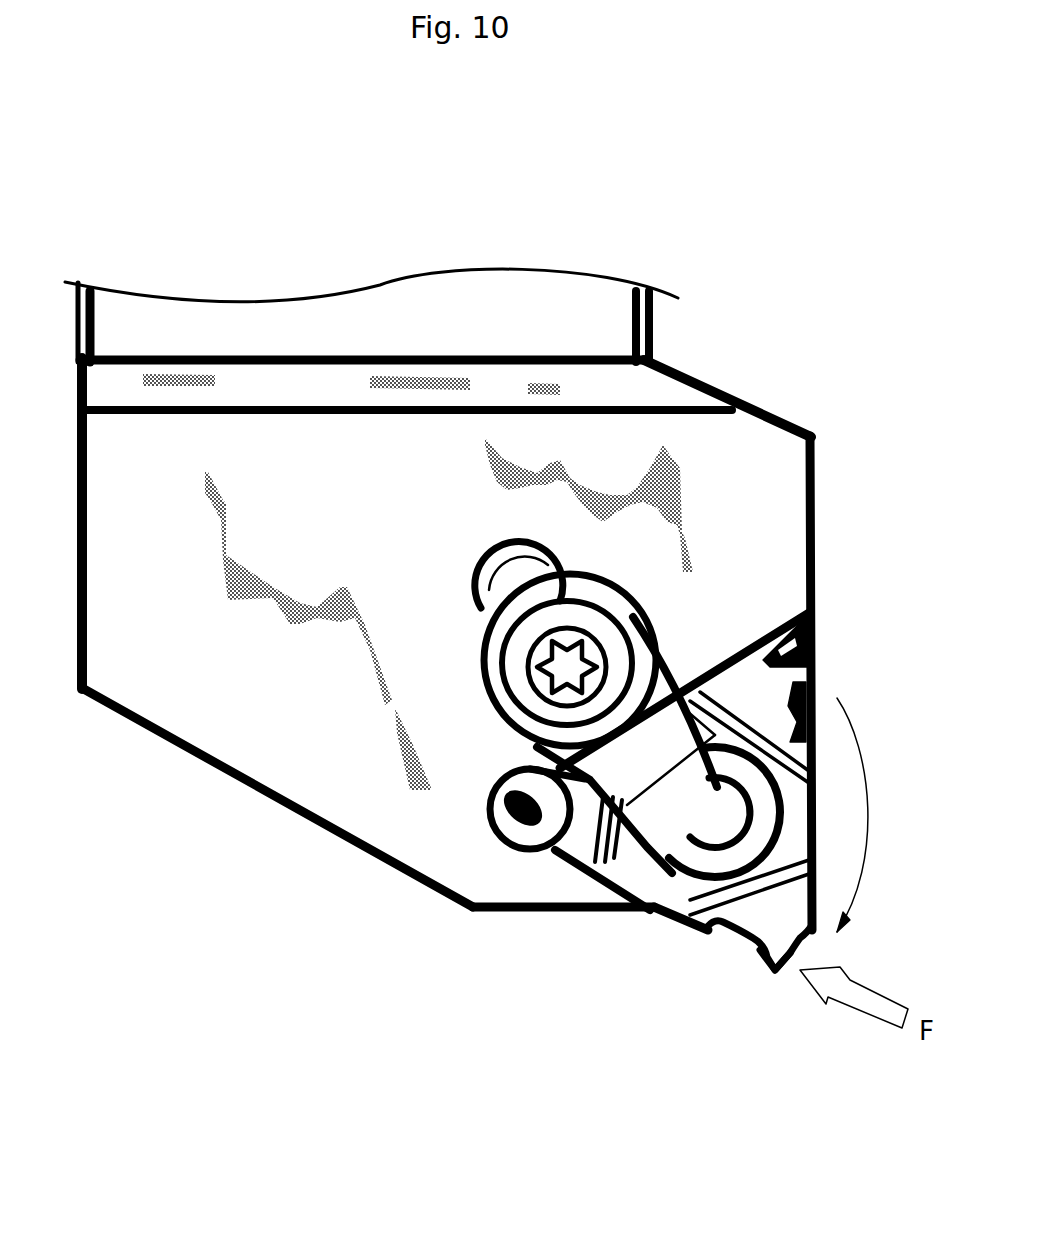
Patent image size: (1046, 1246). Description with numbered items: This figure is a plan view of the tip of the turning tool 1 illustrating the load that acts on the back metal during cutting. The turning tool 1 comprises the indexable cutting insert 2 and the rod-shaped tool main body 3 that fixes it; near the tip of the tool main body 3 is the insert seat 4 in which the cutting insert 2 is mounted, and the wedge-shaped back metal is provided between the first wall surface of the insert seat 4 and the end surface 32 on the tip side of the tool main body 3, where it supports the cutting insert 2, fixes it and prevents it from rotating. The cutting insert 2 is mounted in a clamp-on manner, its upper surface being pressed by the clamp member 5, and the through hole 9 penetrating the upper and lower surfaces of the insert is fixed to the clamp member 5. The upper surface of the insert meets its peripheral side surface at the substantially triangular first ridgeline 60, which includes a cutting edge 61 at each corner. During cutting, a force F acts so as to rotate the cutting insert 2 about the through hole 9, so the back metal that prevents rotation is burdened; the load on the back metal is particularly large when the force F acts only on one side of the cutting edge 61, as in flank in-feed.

The turning tool 1 is at (500, 1139).
The cutting insert 2 is at (762, 697).
The tool main body 3 is at (343, 843).
The insert seat 4 is at (742, 647).
The clamp member 5 is at (643, 762).
The through hole 9 is at (693, 830).
The end surface 32 is at (545, 913).
The first ridgeline 60 is at (532, 887).
The cutting edge 61 is at (777, 970).